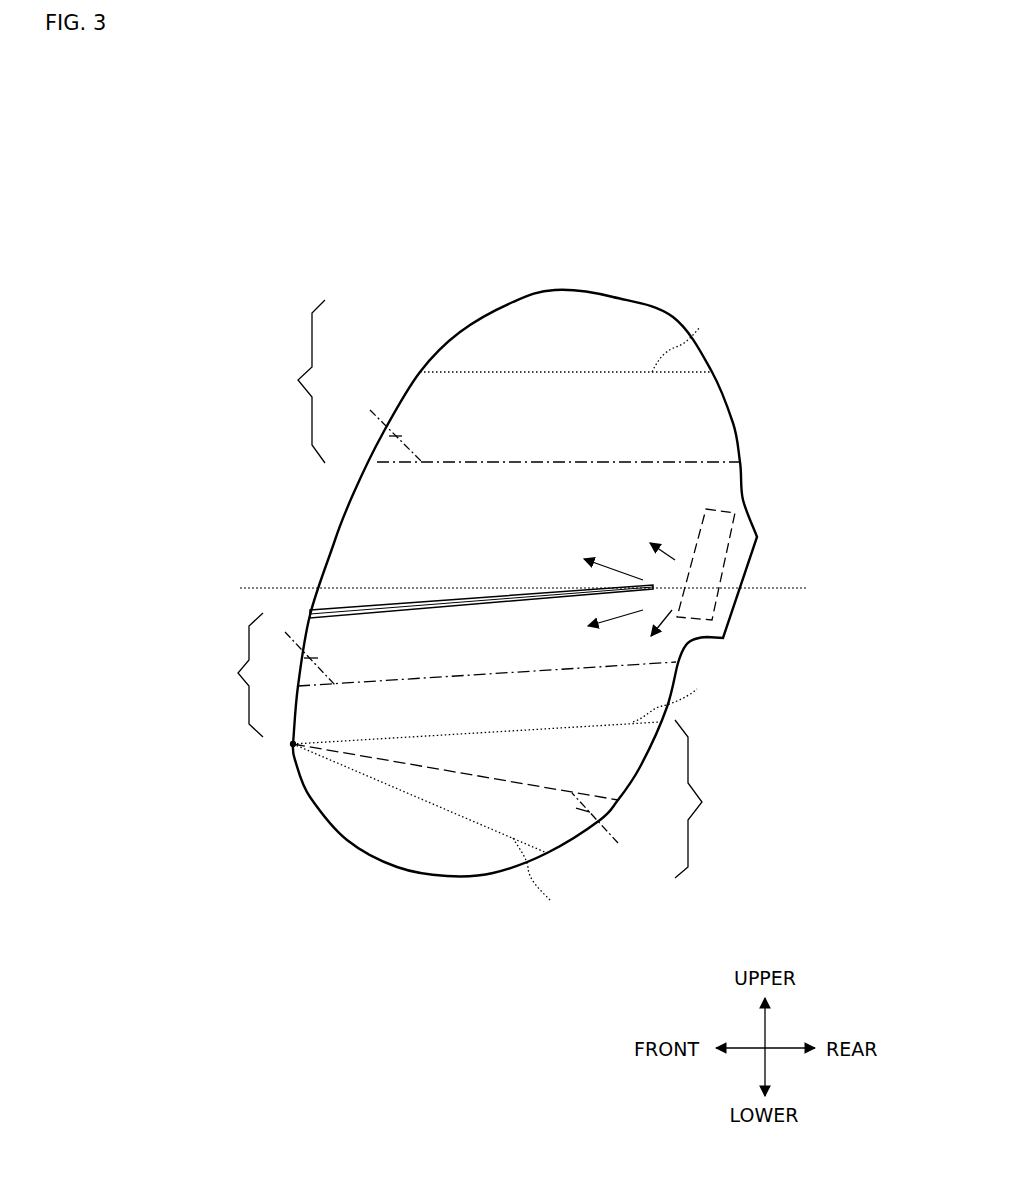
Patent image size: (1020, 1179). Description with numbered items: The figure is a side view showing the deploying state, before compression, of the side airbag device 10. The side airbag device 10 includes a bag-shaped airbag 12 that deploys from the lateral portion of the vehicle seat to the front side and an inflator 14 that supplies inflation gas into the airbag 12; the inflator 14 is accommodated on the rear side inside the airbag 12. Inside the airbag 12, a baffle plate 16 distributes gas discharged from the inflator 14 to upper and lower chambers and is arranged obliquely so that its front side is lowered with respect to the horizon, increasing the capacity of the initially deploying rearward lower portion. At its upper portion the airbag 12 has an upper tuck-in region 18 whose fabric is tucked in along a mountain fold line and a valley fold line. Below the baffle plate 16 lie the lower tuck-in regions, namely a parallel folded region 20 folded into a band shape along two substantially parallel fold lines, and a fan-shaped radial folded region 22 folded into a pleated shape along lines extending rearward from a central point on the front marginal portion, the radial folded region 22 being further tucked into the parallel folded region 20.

The side airbag device 10 is at (326, 233).
The airbag 12 is at (555, 287).
The inflator 14 is at (733, 513).
The baffle plate 16 is at (365, 608).
The upper tuck-in region 18 is at (295, 381).
The parallel folded region 20 is at (238, 675).
The radial folded region 22 is at (703, 799).